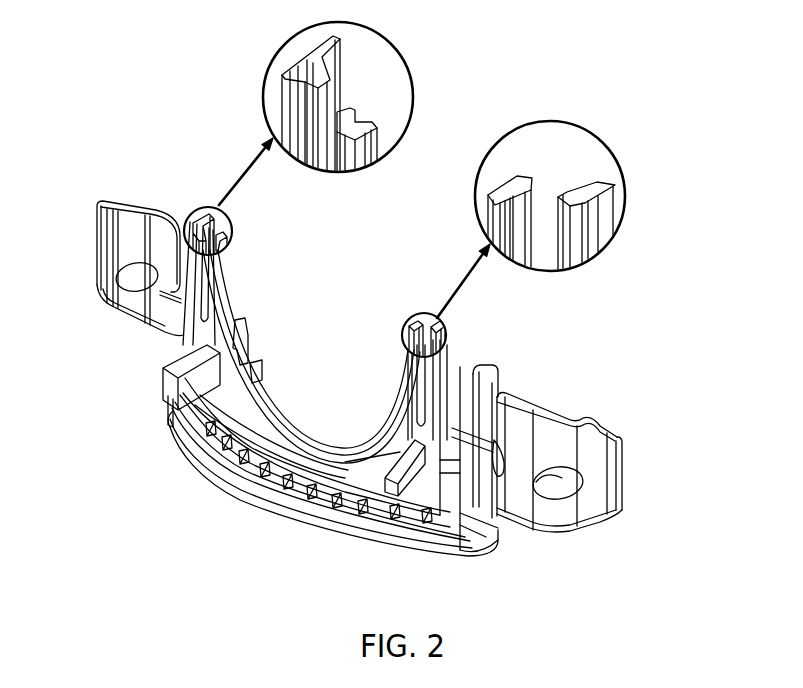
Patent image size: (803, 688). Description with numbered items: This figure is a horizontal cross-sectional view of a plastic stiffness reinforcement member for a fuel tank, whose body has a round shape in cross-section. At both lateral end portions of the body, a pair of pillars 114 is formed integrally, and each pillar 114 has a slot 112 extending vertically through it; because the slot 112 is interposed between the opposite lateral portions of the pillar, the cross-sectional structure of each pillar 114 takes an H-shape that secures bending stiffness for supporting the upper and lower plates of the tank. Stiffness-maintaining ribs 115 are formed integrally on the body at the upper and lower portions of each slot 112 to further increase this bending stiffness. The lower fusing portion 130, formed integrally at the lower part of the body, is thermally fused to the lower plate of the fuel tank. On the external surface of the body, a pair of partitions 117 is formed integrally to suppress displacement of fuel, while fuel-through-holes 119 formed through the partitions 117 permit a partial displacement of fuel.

The slot 112 is at (528, 208).
The pillar 114 is at (590, 164).
The stiffness-maintaining rib 115 is at (173, 368).
The partition 117 is at (606, 487).
The fuel-through-hole 119 is at (553, 493).
The lower fusing portion 130 is at (259, 532).